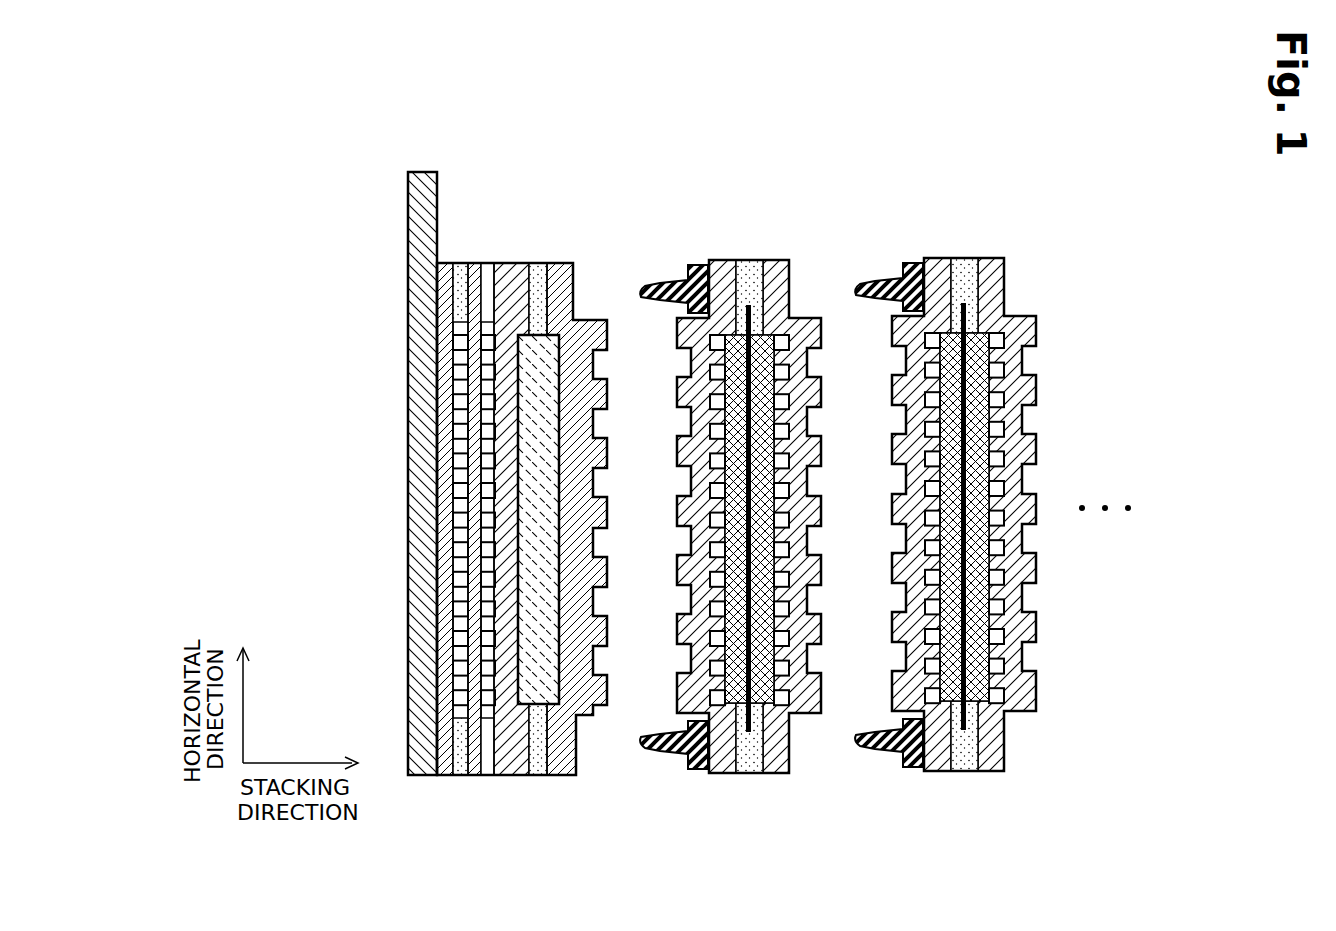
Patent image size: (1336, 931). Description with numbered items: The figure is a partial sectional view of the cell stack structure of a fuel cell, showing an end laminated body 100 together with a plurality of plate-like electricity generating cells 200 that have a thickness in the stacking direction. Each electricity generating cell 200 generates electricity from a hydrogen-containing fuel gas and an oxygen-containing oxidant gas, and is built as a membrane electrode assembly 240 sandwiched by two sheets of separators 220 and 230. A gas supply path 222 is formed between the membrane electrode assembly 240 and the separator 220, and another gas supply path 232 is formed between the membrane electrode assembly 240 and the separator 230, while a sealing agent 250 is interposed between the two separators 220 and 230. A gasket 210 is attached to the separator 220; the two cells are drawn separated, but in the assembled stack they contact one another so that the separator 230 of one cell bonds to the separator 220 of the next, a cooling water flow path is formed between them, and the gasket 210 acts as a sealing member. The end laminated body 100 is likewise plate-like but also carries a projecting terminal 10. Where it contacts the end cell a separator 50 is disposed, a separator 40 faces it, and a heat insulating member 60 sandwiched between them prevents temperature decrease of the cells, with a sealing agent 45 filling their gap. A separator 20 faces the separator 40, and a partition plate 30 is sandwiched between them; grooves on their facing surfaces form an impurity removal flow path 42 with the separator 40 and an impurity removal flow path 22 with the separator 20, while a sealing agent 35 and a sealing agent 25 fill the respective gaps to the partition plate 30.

The terminal 10 is at (423, 178).
The separator 20 is at (446, 264).
The impurity removal flow path 22 is at (456, 347).
The sealing agent 25 is at (463, 776).
The partition plate 30 is at (474, 264).
The sealing agent 35 is at (492, 776).
The separator 40 is at (509, 264).
The impurity removal flow path 42 is at (487, 376).
The sealing agent 45 is at (541, 776).
The separator 50 is at (556, 264).
The heat insulating member 60 is at (546, 357).
The end laminated body 100 is at (558, 147).
The electricity generating cell 200 is at (796, 152).
The gasket 210 is at (691, 266).
The separator 220 is at (717, 261).
The gas supply path 222 is at (712, 374).
The separator 230 is at (762, 261).
The gas supply path 232 is at (788, 374).
The membrane electrode assembly 240 is at (786, 300).
The sealing agent 250 is at (752, 775).